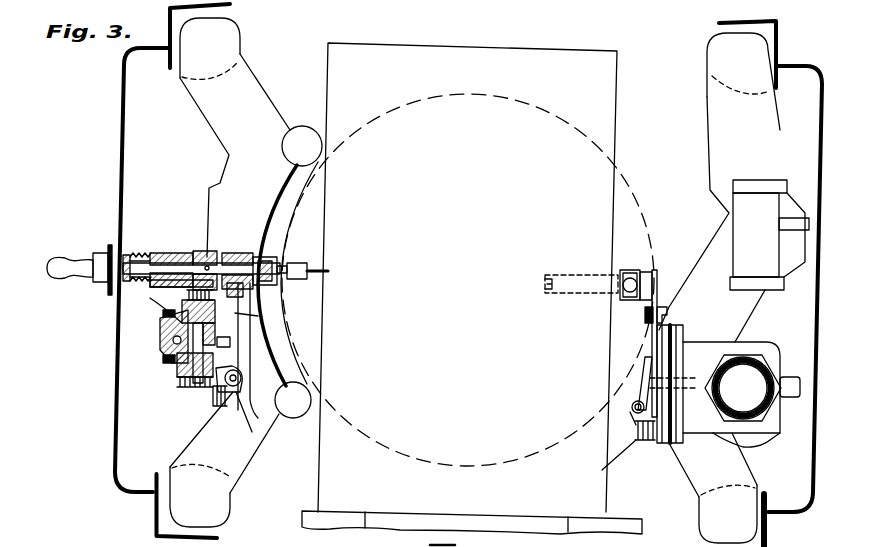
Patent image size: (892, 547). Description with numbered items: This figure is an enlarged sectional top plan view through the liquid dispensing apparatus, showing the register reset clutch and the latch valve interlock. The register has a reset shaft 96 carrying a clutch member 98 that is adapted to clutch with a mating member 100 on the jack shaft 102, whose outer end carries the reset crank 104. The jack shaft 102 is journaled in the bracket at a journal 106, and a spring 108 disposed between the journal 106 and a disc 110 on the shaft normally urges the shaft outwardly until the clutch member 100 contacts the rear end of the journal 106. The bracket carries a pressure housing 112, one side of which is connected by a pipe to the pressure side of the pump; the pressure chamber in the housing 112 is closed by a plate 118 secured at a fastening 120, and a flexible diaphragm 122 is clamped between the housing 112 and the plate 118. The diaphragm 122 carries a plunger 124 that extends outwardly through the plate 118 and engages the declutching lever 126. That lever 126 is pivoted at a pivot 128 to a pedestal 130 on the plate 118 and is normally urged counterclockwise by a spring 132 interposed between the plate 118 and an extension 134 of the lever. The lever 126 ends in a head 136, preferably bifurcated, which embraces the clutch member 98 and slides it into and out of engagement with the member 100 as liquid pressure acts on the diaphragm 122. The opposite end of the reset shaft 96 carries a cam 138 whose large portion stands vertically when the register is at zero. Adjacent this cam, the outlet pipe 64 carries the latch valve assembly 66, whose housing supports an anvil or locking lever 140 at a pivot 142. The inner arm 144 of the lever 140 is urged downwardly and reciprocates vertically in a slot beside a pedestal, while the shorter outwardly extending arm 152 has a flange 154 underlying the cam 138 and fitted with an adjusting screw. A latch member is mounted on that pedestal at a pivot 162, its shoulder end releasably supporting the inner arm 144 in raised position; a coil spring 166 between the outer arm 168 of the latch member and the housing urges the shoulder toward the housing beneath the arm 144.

The outlet pipe 64 is at (779, 358).
The latch valve assembly 66 is at (740, 452).
The reset shaft 96 is at (318, 273).
The clutch member 98 is at (238, 257).
The clutch member 100 is at (208, 215).
The jack shaft 102 is at (150, 250).
The reset crank 104 is at (84, 228).
The journal 106 is at (162, 254).
The spring 108 is at (140, 283).
The disc 110 is at (128, 248).
The pressure housing 112 is at (150, 356).
The plate 118 is at (203, 393).
The fastening 120 is at (175, 295).
The flexible diaphragm 122 is at (232, 357).
The plunger 124 is at (246, 368).
The declutching lever 126 is at (236, 318).
The pivot 128 is at (242, 408).
The pedestal 130 is at (200, 399).
The spring 132 is at (223, 418).
The extension 134 is at (237, 447).
The head 136 is at (243, 297).
The cam 138 is at (640, 268).
The anvil or locking lever 140 is at (657, 343).
The pivot 142 is at (650, 310).
The inner arm 144 is at (646, 366).
The outwardly extending arm 152 is at (654, 290).
The flange 154 is at (645, 276).
The pivot 162 is at (602, 437).
The coil spring 166 is at (643, 432).
The outer arm 168 is at (602, 468).